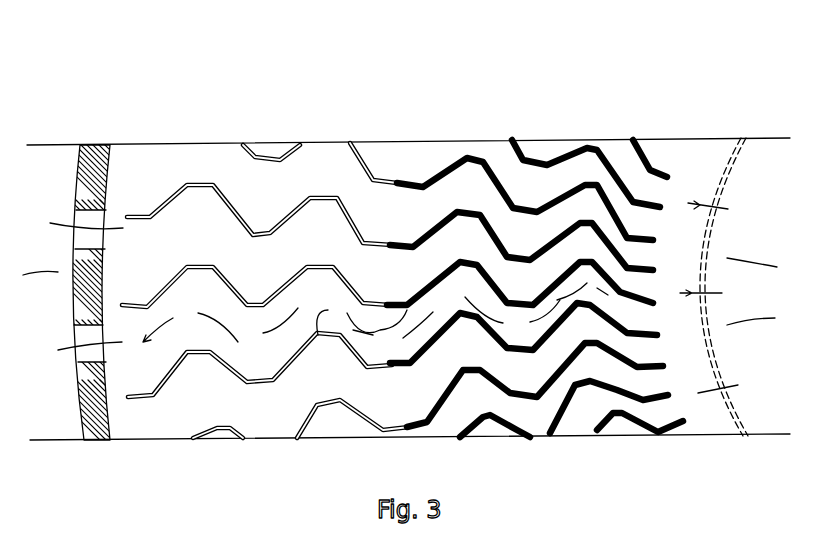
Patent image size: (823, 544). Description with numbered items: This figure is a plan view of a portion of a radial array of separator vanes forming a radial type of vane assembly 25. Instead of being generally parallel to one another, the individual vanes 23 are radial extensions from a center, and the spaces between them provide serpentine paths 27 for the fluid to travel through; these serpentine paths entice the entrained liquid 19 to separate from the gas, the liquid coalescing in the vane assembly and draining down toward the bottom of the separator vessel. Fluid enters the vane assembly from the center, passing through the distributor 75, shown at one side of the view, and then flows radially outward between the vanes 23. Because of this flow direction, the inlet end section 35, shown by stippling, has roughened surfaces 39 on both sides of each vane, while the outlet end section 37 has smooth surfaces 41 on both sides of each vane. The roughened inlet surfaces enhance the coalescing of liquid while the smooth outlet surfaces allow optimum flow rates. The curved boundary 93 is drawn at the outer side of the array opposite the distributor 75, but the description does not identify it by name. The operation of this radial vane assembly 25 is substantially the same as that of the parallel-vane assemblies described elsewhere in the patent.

The vane assembly 25 is at (570, 98).
The vanes 23 is at (273, 155).
The serpentine paths 27 is at (392, 282).
The liquid 19 is at (375, 312).
The side wall 93 is at (78, 390).
The outlet end section 37 is at (187, 402).
The smooth surfaces 41 is at (283, 377).
The roughened surfaces 39 is at (580, 422).
The inlet end section 35 is at (667, 415).
The distributor 75 is at (727, 175).